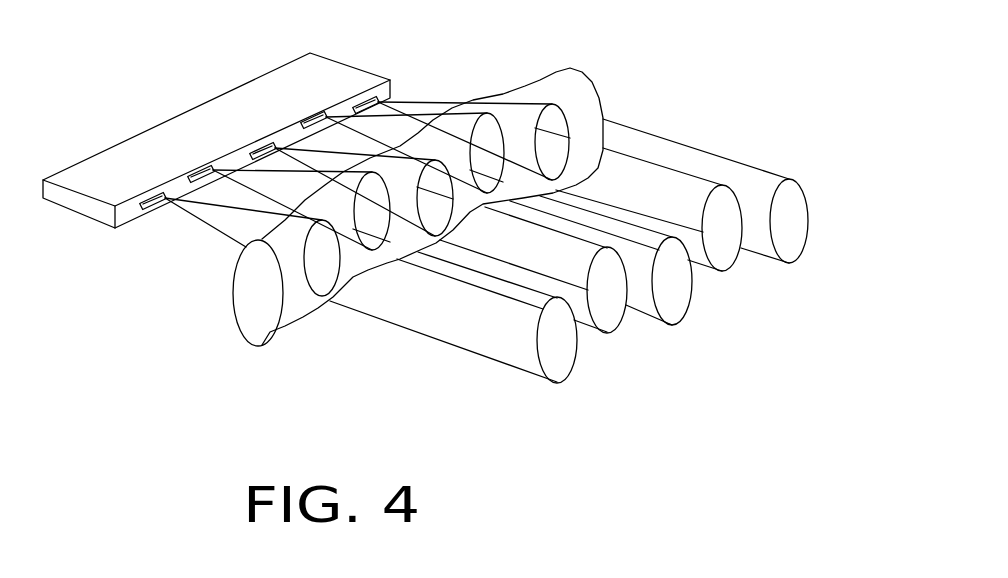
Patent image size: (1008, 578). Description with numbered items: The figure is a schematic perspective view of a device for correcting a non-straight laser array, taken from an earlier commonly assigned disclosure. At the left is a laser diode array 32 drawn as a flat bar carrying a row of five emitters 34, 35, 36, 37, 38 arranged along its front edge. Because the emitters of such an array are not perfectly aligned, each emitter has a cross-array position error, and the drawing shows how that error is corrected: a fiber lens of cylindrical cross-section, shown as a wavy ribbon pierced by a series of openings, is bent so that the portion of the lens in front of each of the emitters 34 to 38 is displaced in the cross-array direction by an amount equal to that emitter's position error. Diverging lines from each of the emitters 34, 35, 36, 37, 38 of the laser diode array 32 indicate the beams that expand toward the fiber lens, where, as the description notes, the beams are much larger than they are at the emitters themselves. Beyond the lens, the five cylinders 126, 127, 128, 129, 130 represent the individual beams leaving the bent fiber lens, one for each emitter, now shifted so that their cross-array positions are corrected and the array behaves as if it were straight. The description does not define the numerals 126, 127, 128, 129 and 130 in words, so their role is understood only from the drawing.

The laser diode array 32 is at (358, 62).
The emitter 34 is at (382, 97).
The emitter 35 is at (314, 114).
The emitter 36 is at (252, 146).
The emitter 37 is at (190, 168).
The emitter 38 is at (148, 210).
The light beam / cylindrical lens element 126 is at (740, 164).
The light beam / cylindrical lens element 127 is at (700, 268).
The light beam / cylindrical lens element 128 is at (650, 315).
The light beam / cylindrical lens element 129 is at (587, 328).
The light beam / cylindrical lens element 130 is at (520, 363).